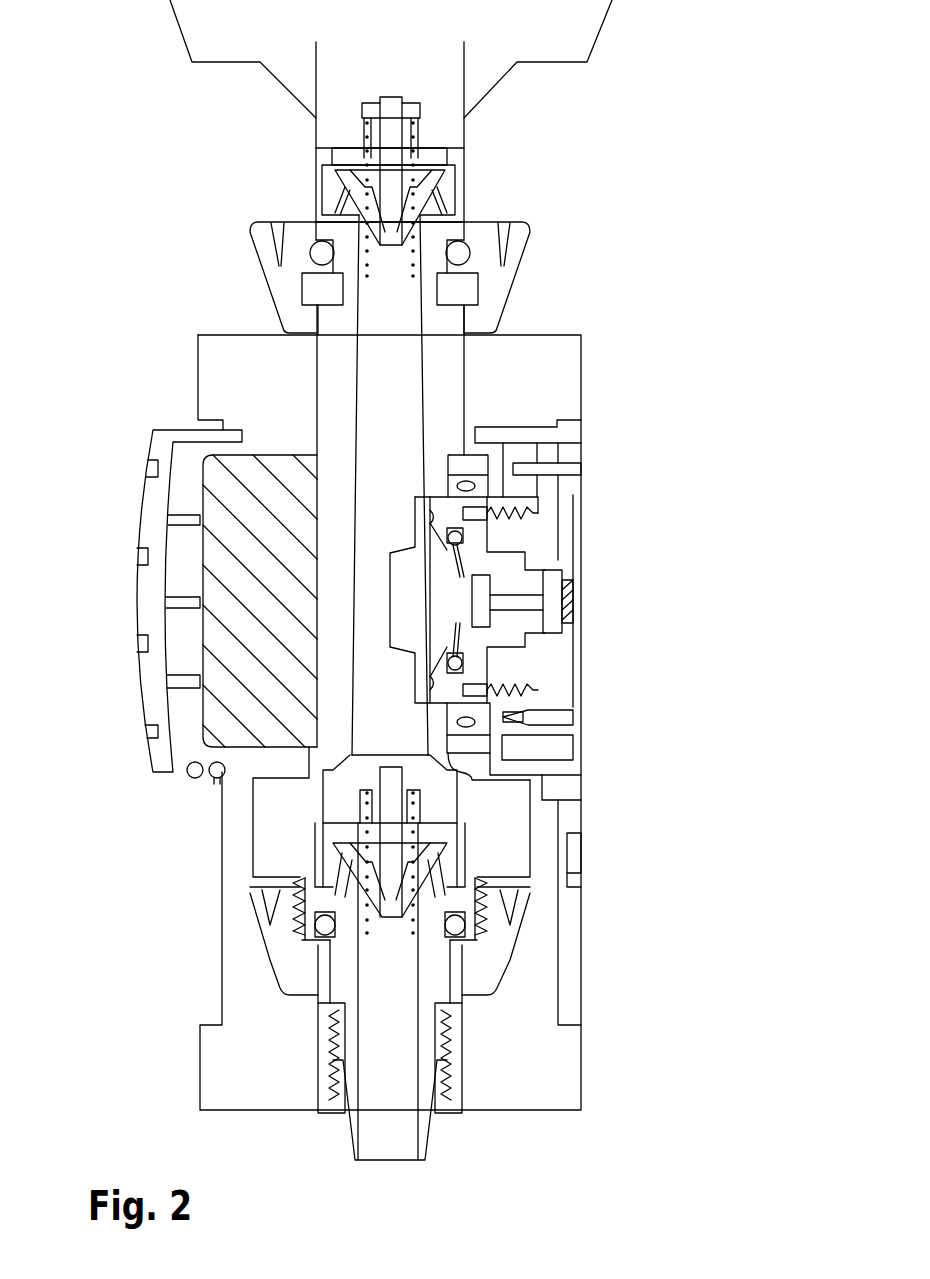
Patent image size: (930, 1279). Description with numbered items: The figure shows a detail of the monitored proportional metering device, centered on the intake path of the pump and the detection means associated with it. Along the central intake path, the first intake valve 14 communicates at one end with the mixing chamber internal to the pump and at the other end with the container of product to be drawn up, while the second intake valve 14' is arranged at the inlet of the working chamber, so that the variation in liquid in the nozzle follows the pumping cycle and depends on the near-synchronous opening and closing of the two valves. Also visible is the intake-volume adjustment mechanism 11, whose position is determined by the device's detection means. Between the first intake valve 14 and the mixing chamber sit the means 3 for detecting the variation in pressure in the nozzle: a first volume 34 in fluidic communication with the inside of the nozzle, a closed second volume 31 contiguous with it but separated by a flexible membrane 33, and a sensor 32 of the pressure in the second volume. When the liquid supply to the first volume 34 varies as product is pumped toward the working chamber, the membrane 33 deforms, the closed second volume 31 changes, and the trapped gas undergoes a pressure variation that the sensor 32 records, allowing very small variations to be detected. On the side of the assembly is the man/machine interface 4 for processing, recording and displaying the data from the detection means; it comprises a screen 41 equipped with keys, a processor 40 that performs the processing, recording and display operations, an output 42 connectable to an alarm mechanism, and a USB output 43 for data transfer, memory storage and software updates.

The intake-volume adjustment mechanism 11 is at (398, 57).
The second intake valve 14' is at (401, 216).
The first intake valve 14 is at (448, 957).
The means for detecting the variation in pressure 3 is at (529, 611).
The closed second volume 31 is at (517, 595).
The sensor 32 is at (572, 595).
The flexible membrane 33 is at (468, 622).
The first volume 34 is at (407, 588).
The man/machine interface 4 is at (194, 586).
The processor 40 is at (205, 660).
The screen 41 is at (160, 447).
The output 42 is at (190, 777).
The USB output 43 is at (212, 782).